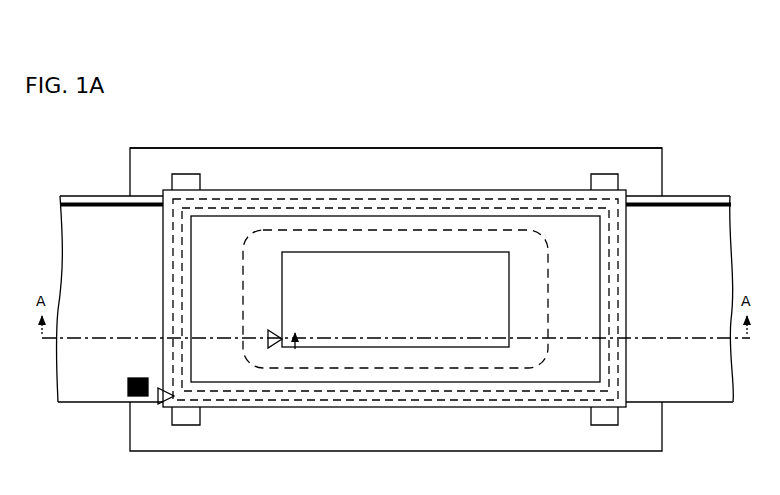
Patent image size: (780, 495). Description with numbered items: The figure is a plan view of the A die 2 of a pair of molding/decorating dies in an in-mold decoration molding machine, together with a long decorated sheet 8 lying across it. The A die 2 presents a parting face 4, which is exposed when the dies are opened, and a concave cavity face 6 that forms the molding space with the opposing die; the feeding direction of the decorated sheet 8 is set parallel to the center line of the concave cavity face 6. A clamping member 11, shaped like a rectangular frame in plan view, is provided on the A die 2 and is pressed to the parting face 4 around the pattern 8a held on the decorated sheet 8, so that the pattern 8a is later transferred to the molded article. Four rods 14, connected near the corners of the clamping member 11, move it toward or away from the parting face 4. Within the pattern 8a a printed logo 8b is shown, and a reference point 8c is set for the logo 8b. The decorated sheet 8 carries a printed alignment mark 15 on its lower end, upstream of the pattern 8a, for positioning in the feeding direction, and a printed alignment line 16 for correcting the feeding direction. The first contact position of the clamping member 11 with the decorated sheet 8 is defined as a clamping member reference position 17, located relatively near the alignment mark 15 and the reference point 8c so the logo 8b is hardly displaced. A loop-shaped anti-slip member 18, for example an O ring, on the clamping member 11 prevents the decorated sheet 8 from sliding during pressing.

The A die 2 is at (271, 148).
The parting face 4 is at (338, 157).
The concave cavity face 6 is at (389, 230).
The decorated sheet 8 is at (103, 406).
The pattern 8a is at (451, 348).
The logo 8b is at (295, 350).
The reference point 8c is at (273, 349).
The clamping member 11 is at (461, 189).
The rods 14 is at (604, 183).
The alignment mark 15 is at (136, 397).
The alignment line 16 is at (80, 203).
The clamping member reference position 17 is at (160, 403).
The loop-shaped anti-slip member 18 is at (213, 199).